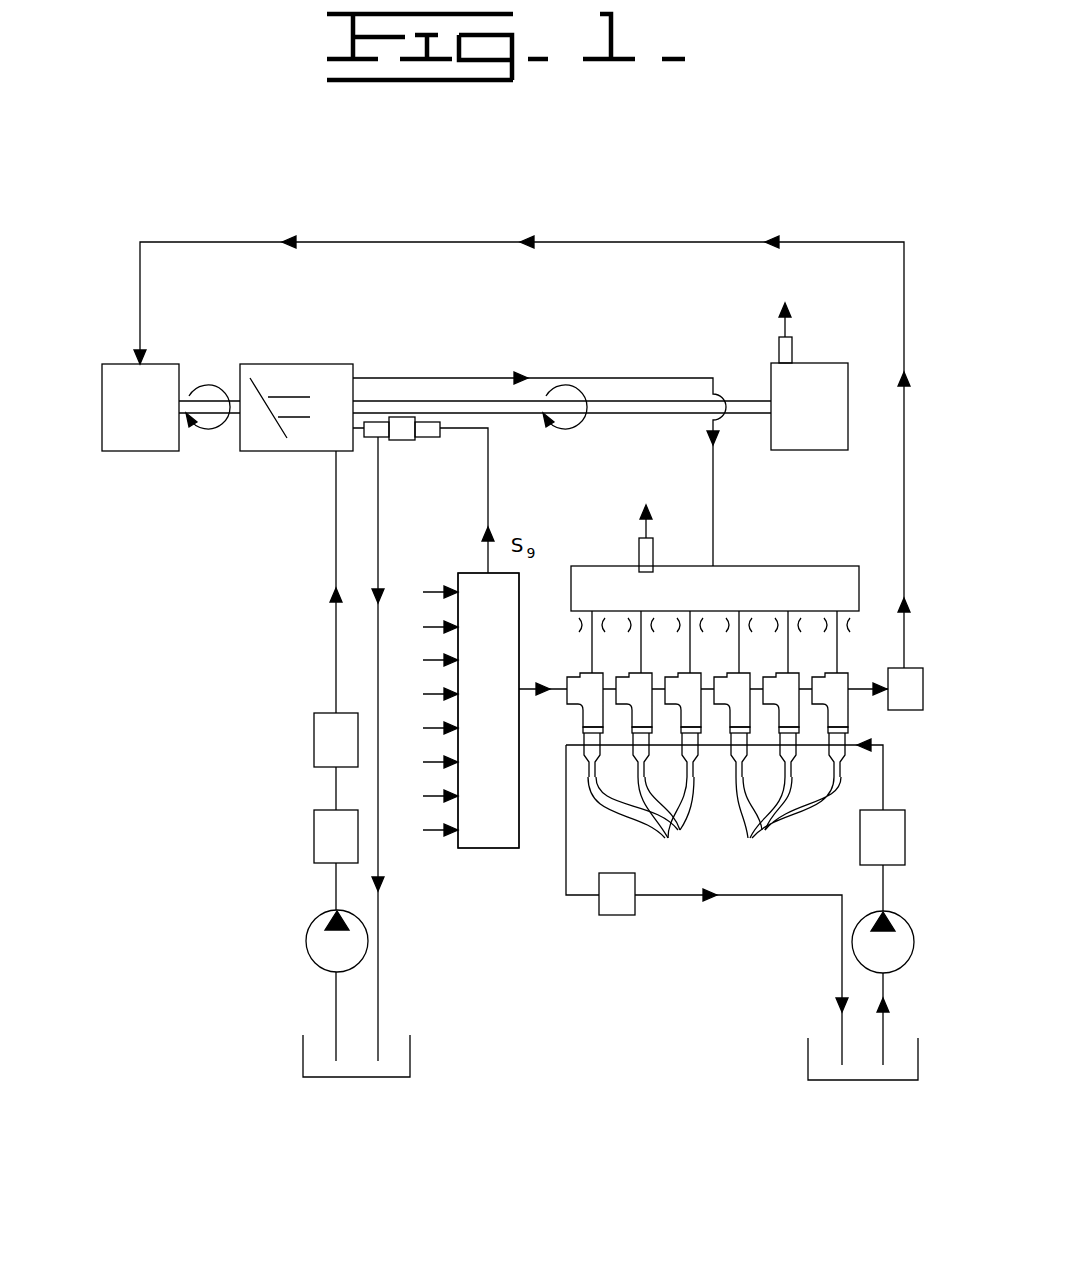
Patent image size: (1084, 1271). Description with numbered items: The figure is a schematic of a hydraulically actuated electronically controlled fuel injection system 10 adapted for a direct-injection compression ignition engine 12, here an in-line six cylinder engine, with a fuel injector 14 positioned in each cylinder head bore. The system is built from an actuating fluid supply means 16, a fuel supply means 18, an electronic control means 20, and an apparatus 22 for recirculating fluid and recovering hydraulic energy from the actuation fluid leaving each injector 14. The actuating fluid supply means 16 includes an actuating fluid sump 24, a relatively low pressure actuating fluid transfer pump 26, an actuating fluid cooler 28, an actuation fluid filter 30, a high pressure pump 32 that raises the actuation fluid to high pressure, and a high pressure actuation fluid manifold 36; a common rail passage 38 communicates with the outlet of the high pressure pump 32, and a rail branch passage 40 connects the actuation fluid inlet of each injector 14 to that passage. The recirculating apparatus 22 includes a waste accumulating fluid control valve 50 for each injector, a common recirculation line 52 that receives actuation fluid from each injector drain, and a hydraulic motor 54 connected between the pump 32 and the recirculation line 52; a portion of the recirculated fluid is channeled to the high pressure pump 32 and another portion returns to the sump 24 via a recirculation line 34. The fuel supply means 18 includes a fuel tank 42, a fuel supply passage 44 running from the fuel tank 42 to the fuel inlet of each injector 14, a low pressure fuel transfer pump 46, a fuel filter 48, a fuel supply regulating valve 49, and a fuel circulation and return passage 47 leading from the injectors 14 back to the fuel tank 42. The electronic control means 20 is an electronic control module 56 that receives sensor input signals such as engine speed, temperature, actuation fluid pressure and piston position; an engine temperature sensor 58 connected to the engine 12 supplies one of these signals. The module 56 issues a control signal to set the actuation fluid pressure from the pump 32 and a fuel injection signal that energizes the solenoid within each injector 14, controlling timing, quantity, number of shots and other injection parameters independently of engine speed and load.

The fuel injection system 10 is at (692, 188).
The engine 12 is at (798, 418).
The fuel injector 14 is at (707, 761).
The actuating fluid supply means 16 is at (370, 1108).
The fuel supply means 18 is at (862, 1100).
The electronic control means 20 is at (489, 862).
The fluid recirculating and hydraulic energy recovering means 22 is at (114, 220).
The actuating fluid sump 24 is at (412, 1052).
The actuating fluid transfer pump 26 is at (306, 940).
The actuating fluid cooler 28 is at (316, 830).
The actuation fluid filter 30 is at (316, 752).
The high pressure pump 32 is at (287, 452).
The recirculation line 34 is at (379, 937).
The actuation fluid manifold 36 is at (768, 552).
The common rail passage 38 is at (614, 566).
The rail branch passage 40 is at (838, 653).
The fuel tank 42 is at (806, 1068).
The fuel supply passage 44 is at (884, 771).
The fuel transfer pump 46 is at (908, 925).
The fuel circulation and return passage 47 is at (841, 913).
The fuel filter 48 is at (871, 850).
The fuel supply regulating valve 49 is at (605, 905).
The waste accumulating fluid control valve 50 is at (894, 702).
The common recirculation line 52 is at (372, 242).
The hydraulic motor 54 is at (128, 418).
The electronic control module 56 is at (476, 717).
The engine temperature sensor 58 is at (793, 348).